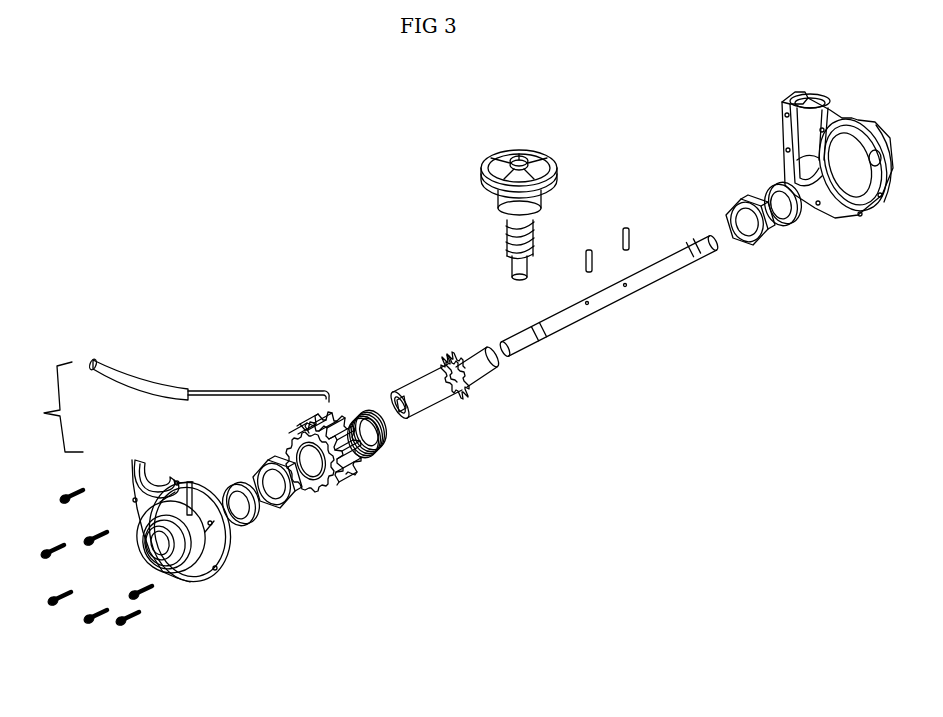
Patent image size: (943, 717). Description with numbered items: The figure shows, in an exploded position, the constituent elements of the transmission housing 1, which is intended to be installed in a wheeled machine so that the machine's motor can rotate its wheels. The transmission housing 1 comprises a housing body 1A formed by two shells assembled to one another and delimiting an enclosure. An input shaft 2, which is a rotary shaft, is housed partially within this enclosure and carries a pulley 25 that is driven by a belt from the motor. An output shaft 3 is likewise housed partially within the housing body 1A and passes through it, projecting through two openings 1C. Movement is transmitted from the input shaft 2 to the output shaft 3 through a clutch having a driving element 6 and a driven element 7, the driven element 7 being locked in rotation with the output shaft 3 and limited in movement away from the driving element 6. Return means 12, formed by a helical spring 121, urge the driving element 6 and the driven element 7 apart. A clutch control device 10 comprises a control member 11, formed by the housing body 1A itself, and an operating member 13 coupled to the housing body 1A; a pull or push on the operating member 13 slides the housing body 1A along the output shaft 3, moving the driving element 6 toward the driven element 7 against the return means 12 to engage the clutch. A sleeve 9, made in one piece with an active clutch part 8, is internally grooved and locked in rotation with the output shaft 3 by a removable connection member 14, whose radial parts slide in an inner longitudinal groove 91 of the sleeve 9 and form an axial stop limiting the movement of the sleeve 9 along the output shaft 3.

The transmission housing 1 is at (837, 114).
The housing body 1A is at (851, 224).
The openings 1C is at (160, 566).
The input shaft 2 is at (500, 235).
The output shaft 3 is at (668, 284).
The driving element 6 is at (318, 493).
The driven element 7 is at (471, 415).
The active clutch part 8 is at (440, 356).
The sleeve 9 is at (418, 380).
The inner longitudinal groove 91 is at (404, 411).
The clutch control device 10 is at (48, 407).
The control member 11 is at (168, 562).
The return means 12 is at (372, 457).
The helical spring 121 is at (363, 410).
The operating member 13 is at (136, 378).
The connection member 14 is at (636, 231).
The pulley 25 is at (543, 151).